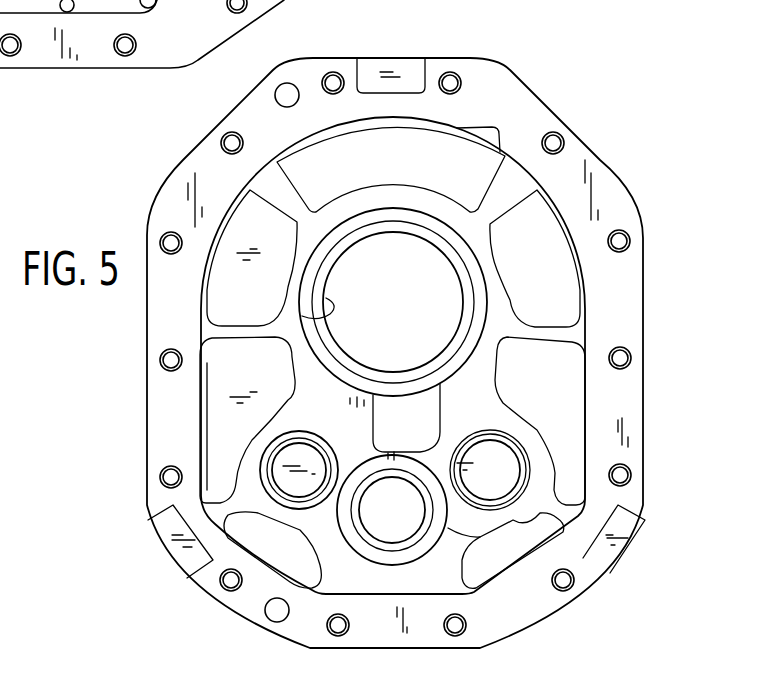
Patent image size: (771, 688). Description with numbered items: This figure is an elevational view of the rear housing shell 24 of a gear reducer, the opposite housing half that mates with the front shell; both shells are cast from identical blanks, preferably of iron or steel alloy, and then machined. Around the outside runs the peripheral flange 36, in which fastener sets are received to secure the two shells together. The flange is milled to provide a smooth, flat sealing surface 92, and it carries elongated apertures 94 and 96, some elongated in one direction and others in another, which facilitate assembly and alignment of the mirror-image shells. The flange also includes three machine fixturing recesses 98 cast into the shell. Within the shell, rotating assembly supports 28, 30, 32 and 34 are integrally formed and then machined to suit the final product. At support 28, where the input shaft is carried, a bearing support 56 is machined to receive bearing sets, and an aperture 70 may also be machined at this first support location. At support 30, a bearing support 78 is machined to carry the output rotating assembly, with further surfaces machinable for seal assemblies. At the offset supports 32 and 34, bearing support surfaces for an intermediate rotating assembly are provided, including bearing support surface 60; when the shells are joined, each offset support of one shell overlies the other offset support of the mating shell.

The rear housing shell 24 is at (126, 503).
The rotating assembly support 28 is at (380, 554).
The rotating assembly support 30 is at (297, 253).
The offset support 32 is at (523, 438).
The offset support 34 is at (258, 440).
The peripheral flange 36 is at (172, 325).
The bearing support 56 is at (377, 480).
The bearing support surface 60 is at (312, 444).
The aperture 70 is at (380, 520).
The bearing support 78 is at (322, 299).
The sealing surface 92 is at (490, 70).
The aperture 94 is at (226, 134).
The aperture 96 is at (334, 72).
The machine fixturing recess 98 is at (405, 66).